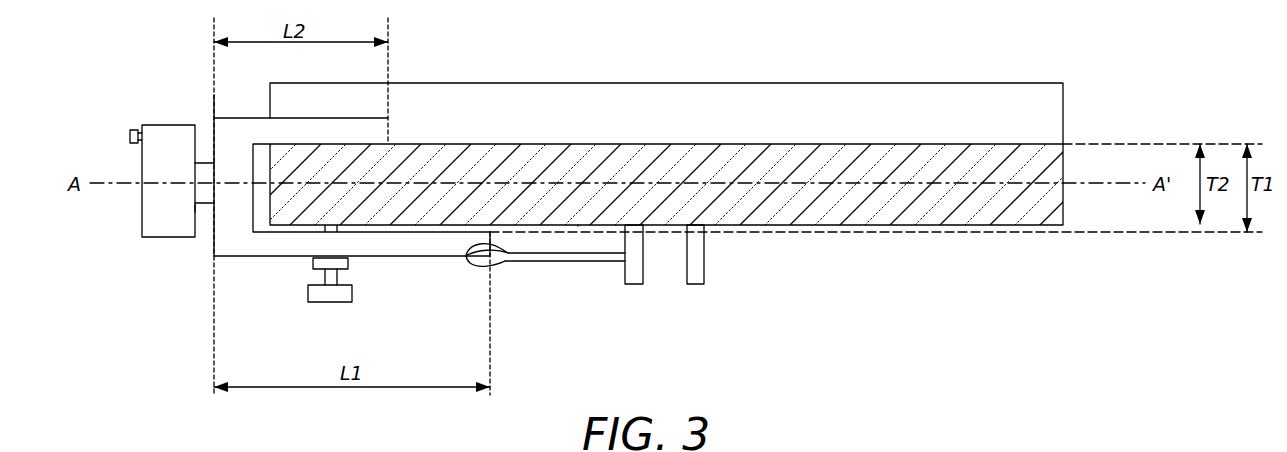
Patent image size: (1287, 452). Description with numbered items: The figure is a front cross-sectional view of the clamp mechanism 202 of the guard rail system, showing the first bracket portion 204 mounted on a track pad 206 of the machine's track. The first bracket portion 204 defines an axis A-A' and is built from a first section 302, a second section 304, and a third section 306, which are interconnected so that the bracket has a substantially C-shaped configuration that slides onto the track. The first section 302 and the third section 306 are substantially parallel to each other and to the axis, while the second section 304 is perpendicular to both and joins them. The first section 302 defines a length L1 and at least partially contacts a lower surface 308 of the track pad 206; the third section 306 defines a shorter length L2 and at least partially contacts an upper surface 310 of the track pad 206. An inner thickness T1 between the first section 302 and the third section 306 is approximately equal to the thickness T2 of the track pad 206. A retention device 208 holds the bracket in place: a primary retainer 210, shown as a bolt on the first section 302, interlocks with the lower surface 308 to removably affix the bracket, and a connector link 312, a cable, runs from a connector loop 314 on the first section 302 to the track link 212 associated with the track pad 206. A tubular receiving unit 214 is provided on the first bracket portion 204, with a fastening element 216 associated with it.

The clamp mechanism 202 is at (405, 112).
The first bracket portion 204 is at (226, 100).
The track pad 206 is at (953, 144).
The retention device 208 is at (312, 318).
The primary retainer 210 is at (335, 303).
The track link 212 is at (632, 285).
The receiving unit 214 is at (142, 223).
The fastening element 216 is at (130, 136).
The first section 302 is at (372, 258).
The second section 304 is at (212, 222).
The third section 306 is at (303, 118).
The lower surface 308 is at (578, 236).
The upper surface 310 is at (454, 136).
The connector link 312 is at (552, 265).
The connector loop 314 is at (505, 268).